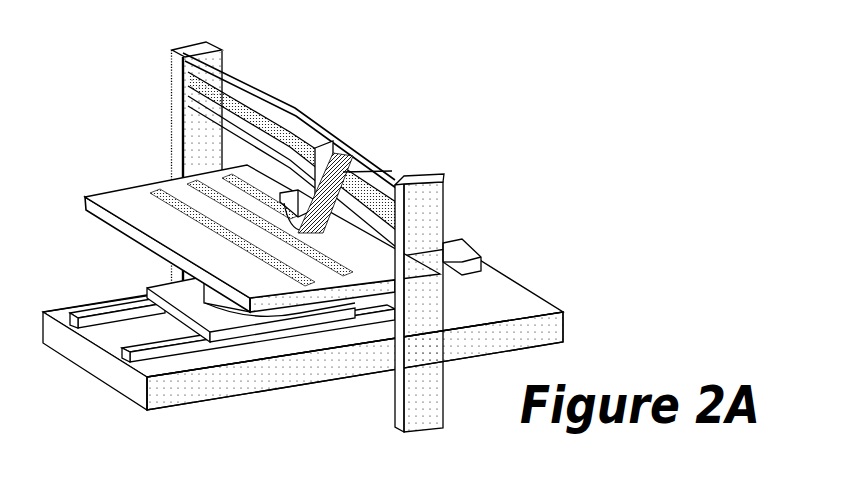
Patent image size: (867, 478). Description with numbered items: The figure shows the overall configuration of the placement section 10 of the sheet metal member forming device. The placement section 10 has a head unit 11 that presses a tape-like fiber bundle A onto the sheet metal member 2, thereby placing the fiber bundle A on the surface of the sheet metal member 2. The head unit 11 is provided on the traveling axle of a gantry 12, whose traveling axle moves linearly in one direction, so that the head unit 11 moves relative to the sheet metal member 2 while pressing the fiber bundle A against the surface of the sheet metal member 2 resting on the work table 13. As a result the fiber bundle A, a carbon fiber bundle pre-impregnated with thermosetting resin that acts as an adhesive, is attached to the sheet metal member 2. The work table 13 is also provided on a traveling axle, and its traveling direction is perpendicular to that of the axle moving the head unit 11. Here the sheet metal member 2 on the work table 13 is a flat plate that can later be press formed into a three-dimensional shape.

The placement section 10 is at (165, 107).
The head unit 11 is at (329, 150).
The gantry 12 is at (254, 106).
The work table 13 is at (170, 237).
The sheet metal member 2 is at (160, 210).
The fiber bundle A is at (167, 197).